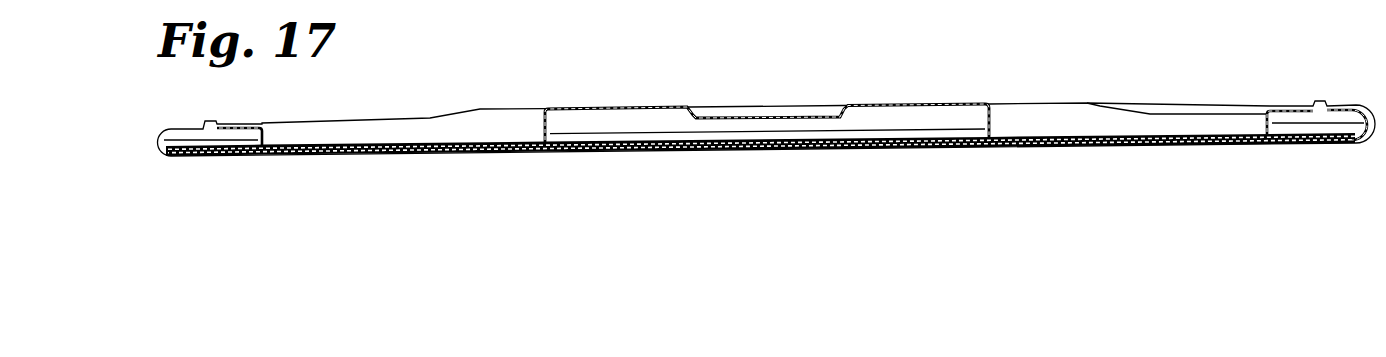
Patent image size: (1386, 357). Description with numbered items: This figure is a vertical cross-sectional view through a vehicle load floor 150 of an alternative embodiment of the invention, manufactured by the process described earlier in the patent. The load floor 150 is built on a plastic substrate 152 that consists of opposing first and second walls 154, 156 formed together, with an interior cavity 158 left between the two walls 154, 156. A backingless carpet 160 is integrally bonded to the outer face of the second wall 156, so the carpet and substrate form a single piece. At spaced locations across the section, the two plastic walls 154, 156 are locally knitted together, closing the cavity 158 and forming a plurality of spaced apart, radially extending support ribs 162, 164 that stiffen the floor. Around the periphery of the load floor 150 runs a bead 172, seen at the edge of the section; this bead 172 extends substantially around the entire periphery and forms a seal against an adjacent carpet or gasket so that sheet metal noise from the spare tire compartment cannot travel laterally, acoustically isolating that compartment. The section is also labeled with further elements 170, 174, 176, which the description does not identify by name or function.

The vehicle load floor 150 is at (544, 161).
The plastic substrate 152 is at (950, 100).
The first wall 154 is at (870, 105).
The second wall 156 is at (938, 140).
The interior cavity 158 is at (585, 125).
The backingless carpet 160 is at (800, 150).
The support rib 162 is at (756, 4).
The support rib 164 is at (441, 145).
The insulating layer 170 is at (965, 13).
The bead 172 is at (1315, 108).
The lead 174 is at (590, 0).
The coating 176 is at (1046, 0).